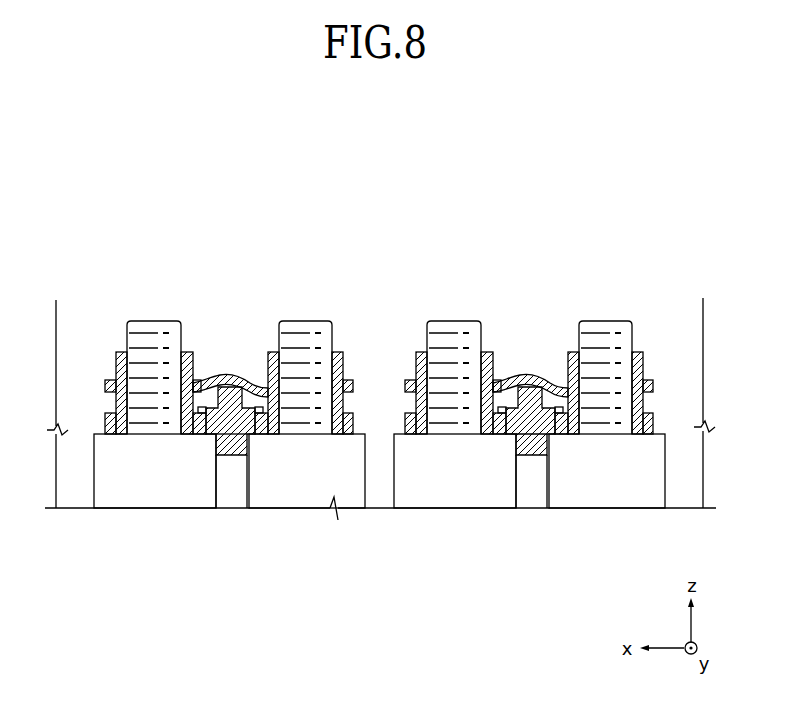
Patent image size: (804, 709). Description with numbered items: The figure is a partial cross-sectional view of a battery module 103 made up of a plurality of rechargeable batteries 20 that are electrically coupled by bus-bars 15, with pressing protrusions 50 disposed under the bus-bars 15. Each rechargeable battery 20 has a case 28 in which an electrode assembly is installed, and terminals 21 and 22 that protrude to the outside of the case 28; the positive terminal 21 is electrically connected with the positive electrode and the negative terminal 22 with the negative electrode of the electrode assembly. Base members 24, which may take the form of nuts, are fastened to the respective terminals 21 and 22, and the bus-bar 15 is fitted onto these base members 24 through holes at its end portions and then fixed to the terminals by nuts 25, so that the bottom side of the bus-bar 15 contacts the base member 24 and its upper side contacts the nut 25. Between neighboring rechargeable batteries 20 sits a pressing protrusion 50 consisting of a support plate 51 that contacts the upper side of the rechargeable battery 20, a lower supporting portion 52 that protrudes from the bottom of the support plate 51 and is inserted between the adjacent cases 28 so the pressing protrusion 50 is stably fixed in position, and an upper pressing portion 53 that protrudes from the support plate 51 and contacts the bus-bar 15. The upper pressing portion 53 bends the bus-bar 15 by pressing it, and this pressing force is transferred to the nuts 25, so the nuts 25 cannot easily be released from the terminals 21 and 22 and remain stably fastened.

The battery module 103 is at (397, 241).
The bus-bar 15 is at (229, 347).
The rechargeable battery 20 is at (91, 483).
The positive terminal 21 is at (158, 320).
The negative terminal 22 is at (299, 320).
The base member 24 is at (116, 402).
The nut 25 is at (119, 351).
The case 28 is at (155, 493).
The pressing protrusion 50 is at (532, 466).
The support plate 51 is at (258, 428).
The lower supporting portion 52 is at (230, 443).
The upper pressing portion 53 is at (208, 377).